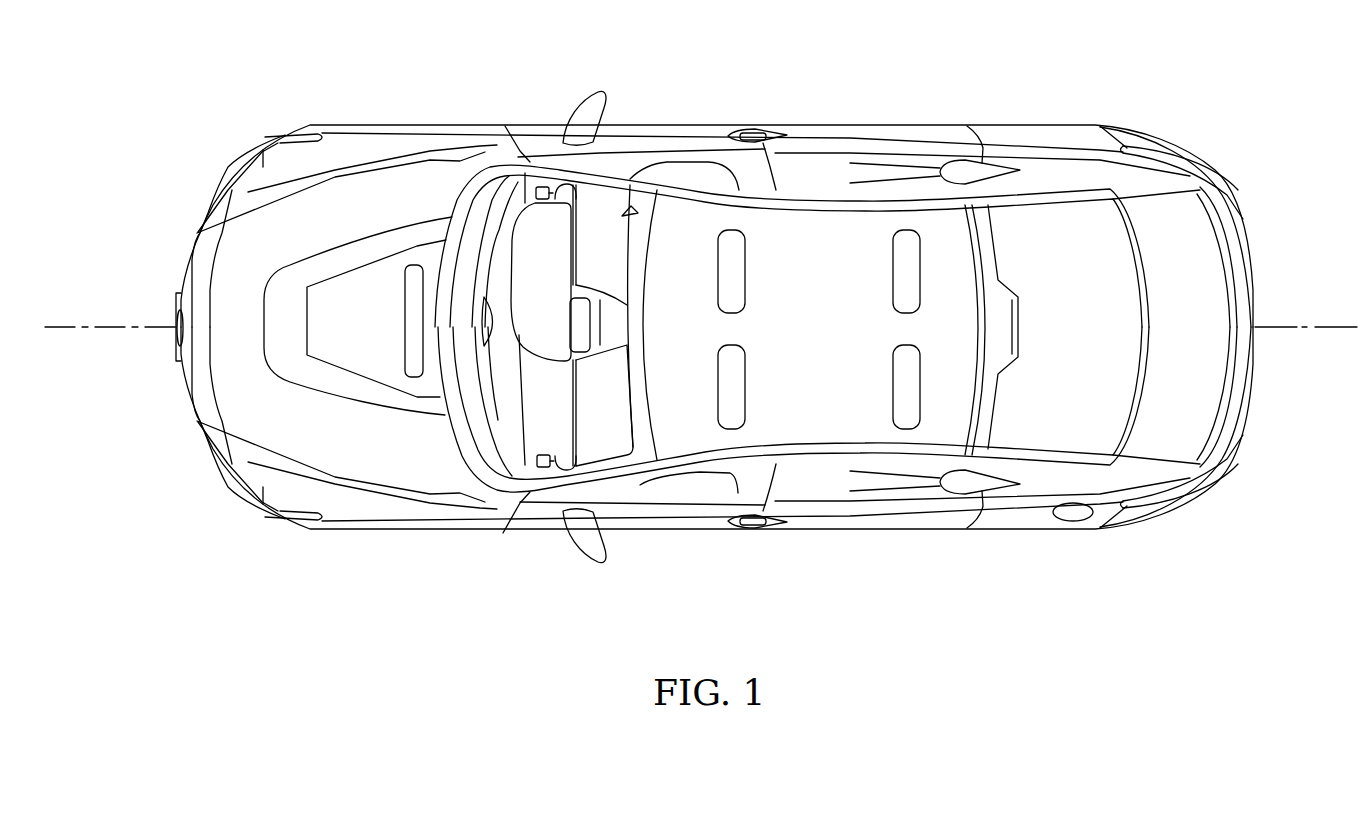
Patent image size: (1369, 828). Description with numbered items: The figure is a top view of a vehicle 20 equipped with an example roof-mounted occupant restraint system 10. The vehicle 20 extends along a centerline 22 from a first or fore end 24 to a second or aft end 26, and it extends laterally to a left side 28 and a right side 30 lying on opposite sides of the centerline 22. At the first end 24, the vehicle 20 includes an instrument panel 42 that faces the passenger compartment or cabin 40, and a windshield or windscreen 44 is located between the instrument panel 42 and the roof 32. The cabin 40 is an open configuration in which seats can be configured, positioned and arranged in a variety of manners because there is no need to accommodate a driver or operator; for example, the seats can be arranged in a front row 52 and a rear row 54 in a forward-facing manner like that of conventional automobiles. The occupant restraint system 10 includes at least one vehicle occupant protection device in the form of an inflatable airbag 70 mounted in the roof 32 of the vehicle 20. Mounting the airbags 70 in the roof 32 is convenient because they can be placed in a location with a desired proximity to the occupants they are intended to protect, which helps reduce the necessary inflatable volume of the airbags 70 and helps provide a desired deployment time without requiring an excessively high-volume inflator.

The occupant restraint system 10 is at (819, 408).
The vehicle 20 is at (1002, 90).
The centerline 22 is at (88, 330).
The first end 24 is at (198, 127).
The second end 26 is at (1236, 142).
The left side 28 is at (791, 556).
The right side 30 is at (789, 98).
The roof 32 is at (807, 338).
The passenger cabin 40 is at (1000, 250).
The instrument panel 42 is at (512, 207).
The windshield 44 is at (532, 433).
The front row 52 is at (689, 501).
The rear row 54 is at (969, 496).
The inflatable airbag 70 is at (742, 267).